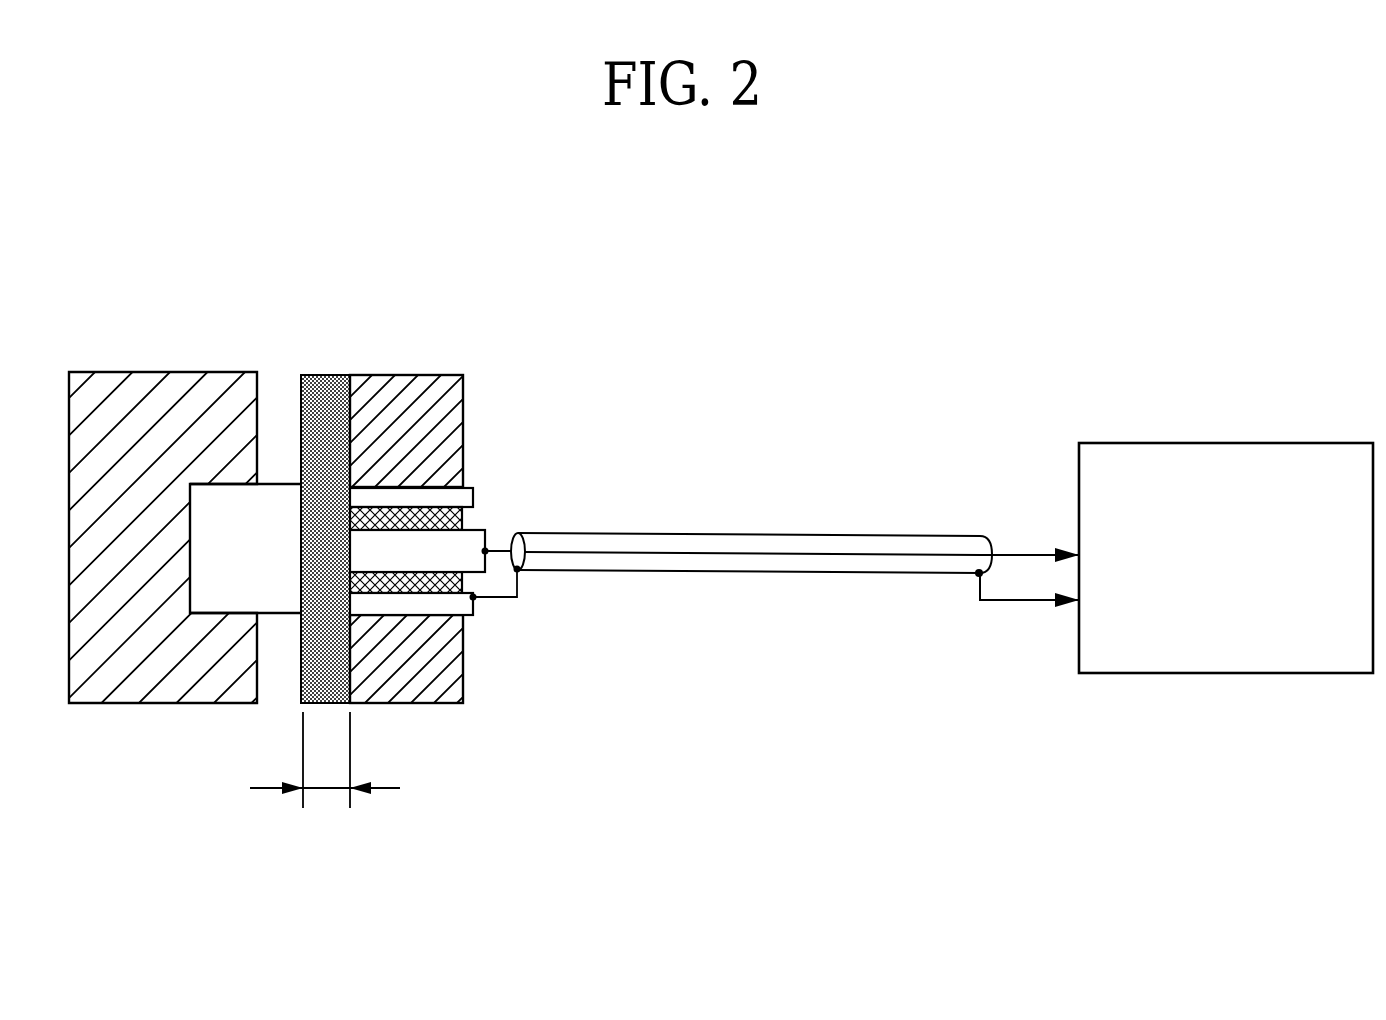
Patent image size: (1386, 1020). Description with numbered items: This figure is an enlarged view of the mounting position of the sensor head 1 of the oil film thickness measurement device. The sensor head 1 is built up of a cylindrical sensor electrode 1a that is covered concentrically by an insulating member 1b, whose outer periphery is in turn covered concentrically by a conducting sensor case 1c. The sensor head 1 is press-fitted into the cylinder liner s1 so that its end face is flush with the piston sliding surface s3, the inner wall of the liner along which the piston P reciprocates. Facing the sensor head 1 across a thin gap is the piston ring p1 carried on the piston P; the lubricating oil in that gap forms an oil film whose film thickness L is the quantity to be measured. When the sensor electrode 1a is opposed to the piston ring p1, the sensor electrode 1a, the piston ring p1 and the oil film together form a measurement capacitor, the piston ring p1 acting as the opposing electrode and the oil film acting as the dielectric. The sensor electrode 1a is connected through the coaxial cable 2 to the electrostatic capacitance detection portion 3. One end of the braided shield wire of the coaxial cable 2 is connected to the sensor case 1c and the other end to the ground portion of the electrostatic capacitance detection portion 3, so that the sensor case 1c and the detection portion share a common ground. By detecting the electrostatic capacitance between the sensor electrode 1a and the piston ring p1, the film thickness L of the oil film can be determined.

The sensor head 1 is at (419, 513).
The sensor electrode 1a is at (487, 527).
The insulating member 1b is at (462, 583).
The sensor case 1c is at (468, 615).
The coaxial cable 2 is at (656, 533).
The electrostatic capacitance detection portion 3 is at (1285, 443).
The cylinder liner s1 is at (463, 400).
The piston sliding surface s3 is at (340, 377).
The piston P is at (175, 703).
The piston ring p1 is at (216, 592).
The film thickness L is at (327, 790).